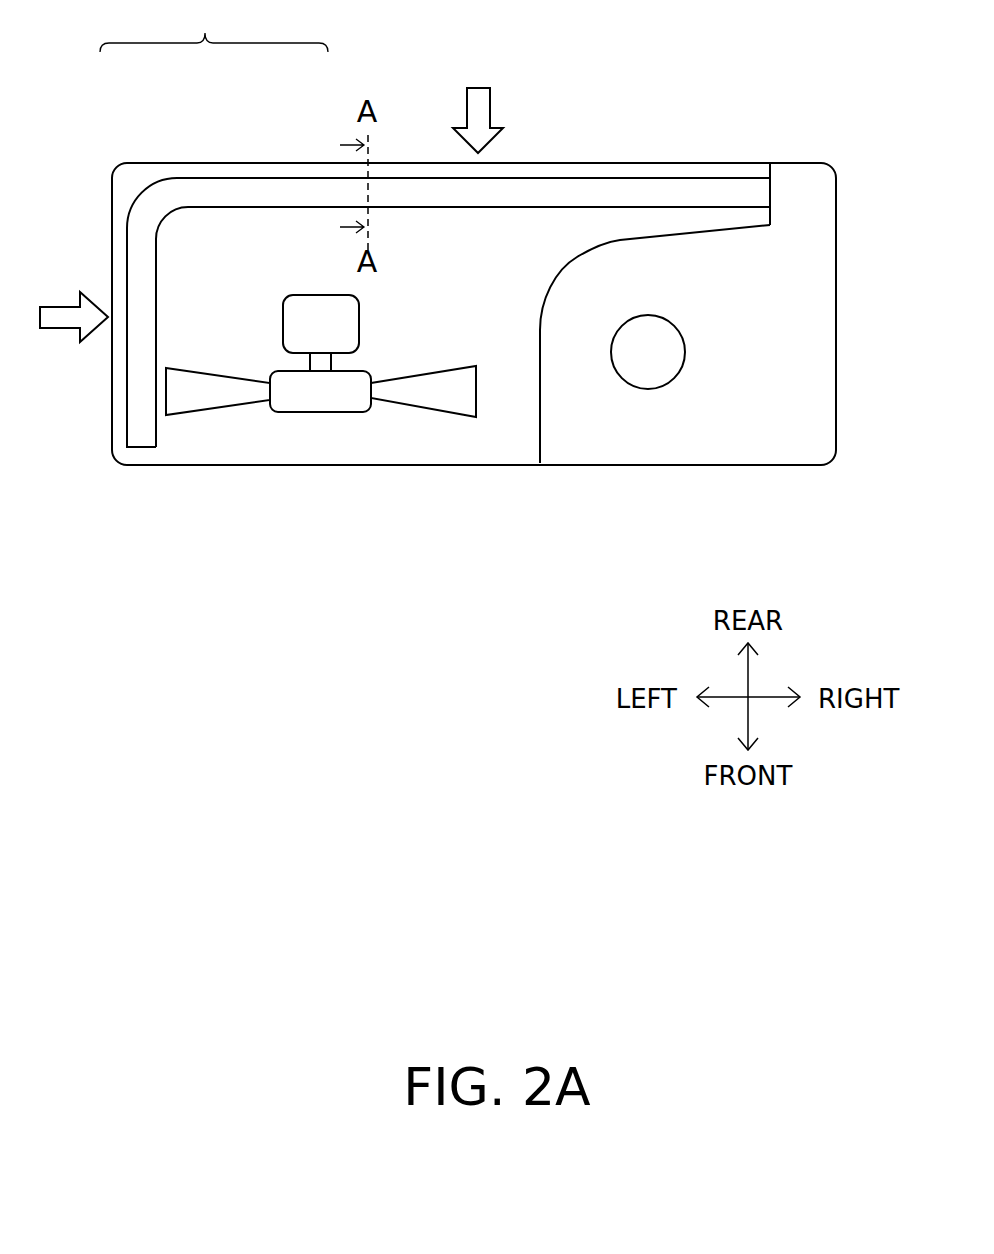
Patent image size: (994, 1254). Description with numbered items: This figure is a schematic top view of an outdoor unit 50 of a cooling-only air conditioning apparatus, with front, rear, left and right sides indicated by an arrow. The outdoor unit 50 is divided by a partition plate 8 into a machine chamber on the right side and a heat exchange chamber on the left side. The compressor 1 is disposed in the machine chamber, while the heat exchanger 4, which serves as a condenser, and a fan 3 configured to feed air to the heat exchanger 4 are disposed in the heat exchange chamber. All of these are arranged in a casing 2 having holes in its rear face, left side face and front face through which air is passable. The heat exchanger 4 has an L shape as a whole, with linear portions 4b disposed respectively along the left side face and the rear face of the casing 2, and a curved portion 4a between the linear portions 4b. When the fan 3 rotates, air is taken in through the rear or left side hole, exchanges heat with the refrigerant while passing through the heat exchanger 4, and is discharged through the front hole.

The compressor 1 is at (648, 365).
The casing 2 is at (430, 223).
The fan 3 is at (215, 398).
The heat exchanger 4 is at (430, 223).
The curved portion 4a is at (160, 207).
The linear portions 4b is at (143, 272).
The partition plate 8 is at (582, 255).
The outdoor unit 50 is at (871, 202).